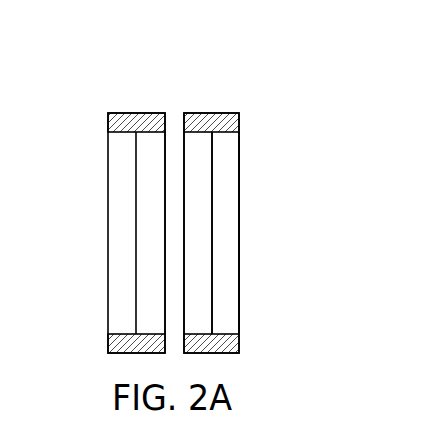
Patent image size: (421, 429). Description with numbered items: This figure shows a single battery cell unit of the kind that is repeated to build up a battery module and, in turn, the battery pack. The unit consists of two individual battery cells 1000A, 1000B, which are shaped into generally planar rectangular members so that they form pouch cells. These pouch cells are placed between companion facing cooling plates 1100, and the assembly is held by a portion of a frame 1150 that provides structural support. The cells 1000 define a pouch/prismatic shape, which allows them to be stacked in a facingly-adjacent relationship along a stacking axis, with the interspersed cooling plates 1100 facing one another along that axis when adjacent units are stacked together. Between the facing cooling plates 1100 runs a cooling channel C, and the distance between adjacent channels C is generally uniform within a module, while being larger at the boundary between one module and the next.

The battery cells 1000 is at (116, 182).
The first battery cell 1000A is at (227, 205).
The second battery cell 1000B is at (282, 233).
The frame 1150 is at (240, 122).
The cooling plates 1100 is at (240, 283).
The cooling channel C is at (133, 233).